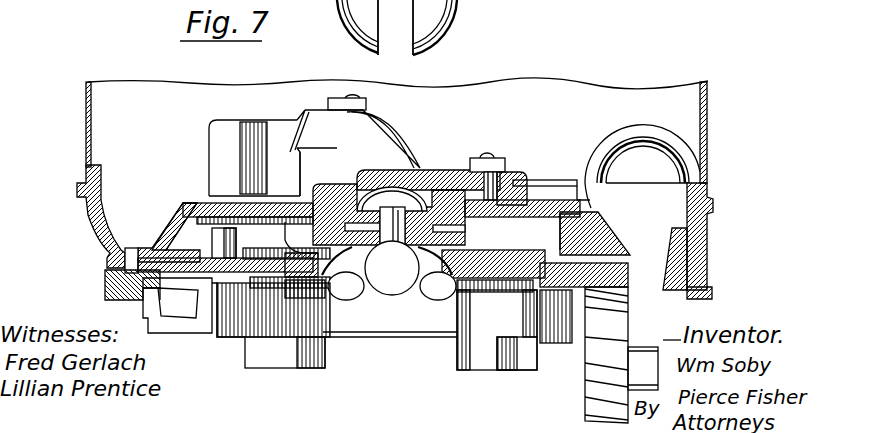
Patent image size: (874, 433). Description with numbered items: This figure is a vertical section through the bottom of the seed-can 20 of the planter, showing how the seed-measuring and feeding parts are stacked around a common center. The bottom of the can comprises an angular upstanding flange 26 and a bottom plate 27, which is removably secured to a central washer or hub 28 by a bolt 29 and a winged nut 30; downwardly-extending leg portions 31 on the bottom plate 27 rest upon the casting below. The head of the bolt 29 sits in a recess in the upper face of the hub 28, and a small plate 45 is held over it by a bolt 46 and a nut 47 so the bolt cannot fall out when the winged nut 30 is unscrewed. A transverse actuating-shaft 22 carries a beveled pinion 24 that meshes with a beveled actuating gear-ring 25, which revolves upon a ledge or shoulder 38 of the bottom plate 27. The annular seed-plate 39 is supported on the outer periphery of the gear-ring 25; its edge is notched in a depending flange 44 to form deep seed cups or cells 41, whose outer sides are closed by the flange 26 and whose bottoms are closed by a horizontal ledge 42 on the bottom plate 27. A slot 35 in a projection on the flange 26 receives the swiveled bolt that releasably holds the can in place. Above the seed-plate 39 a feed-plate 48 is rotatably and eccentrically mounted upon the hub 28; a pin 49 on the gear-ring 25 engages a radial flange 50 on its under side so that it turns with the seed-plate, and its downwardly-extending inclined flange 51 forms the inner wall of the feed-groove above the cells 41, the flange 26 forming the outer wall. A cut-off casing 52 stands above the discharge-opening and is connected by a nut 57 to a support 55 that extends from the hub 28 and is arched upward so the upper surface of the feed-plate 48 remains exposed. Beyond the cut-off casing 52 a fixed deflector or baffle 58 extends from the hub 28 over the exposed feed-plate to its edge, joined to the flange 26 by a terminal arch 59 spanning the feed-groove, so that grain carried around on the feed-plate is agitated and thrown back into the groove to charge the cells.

The seed-can 20 is at (92, 103).
The actuating-shaft 22 is at (638, 353).
The beveled pinion 24 is at (583, 383).
The beveled actuating gear-ring 25 is at (182, 292).
The angular upstanding flange 26 is at (88, 224).
The bottom plate 27 is at (273, 317).
The washer or hub 28 is at (338, 188).
The bolt 29 is at (420, 158).
The winged nut 30 is at (422, 297).
The leg portions 31 is at (326, 356).
The slot 35 is at (405, 15).
The ledge or shoulder 38 is at (225, 300).
The annular seed-plate 39 is at (105, 282).
The seed cups or cells 41 is at (130, 248).
The horizontal ledge 42 is at (113, 290).
The depending flange 44 is at (133, 290).
The small plate 45 is at (437, 172).
The bolt 46 is at (513, 176).
The nut 47 is at (500, 163).
The feed-plate 48 is at (195, 204).
The pin 49 is at (240, 238).
The radial flange 50 is at (183, 205).
The inclined or beveled flange 51 is at (612, 238).
The cut-off casing 52 is at (262, 135).
The support 55 is at (326, 153).
The nut 57 is at (366, 108).
The deflector or baffle 58 is at (557, 203).
The terminal arch 59 is at (660, 128).